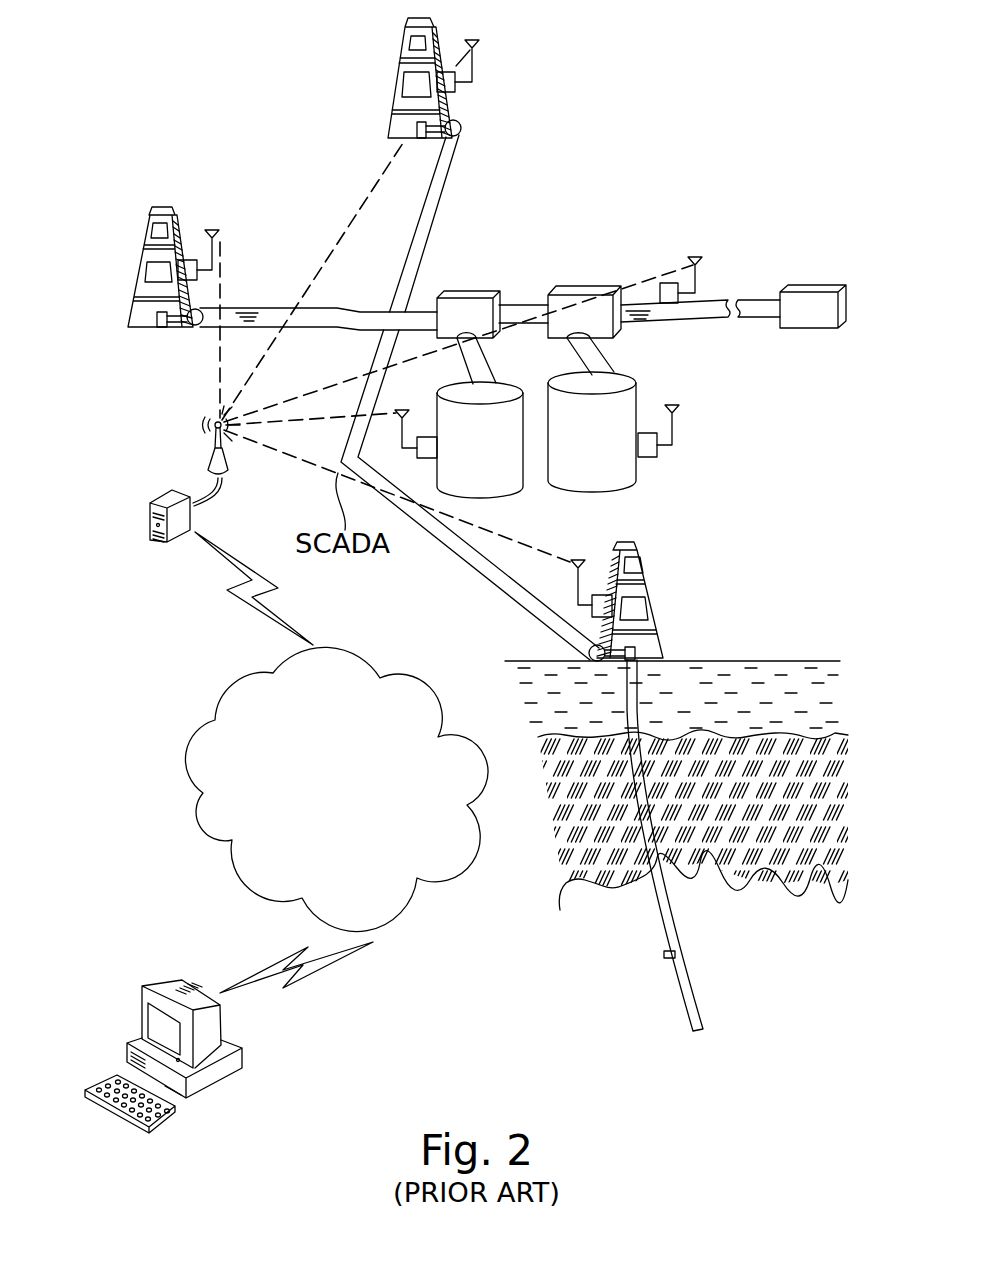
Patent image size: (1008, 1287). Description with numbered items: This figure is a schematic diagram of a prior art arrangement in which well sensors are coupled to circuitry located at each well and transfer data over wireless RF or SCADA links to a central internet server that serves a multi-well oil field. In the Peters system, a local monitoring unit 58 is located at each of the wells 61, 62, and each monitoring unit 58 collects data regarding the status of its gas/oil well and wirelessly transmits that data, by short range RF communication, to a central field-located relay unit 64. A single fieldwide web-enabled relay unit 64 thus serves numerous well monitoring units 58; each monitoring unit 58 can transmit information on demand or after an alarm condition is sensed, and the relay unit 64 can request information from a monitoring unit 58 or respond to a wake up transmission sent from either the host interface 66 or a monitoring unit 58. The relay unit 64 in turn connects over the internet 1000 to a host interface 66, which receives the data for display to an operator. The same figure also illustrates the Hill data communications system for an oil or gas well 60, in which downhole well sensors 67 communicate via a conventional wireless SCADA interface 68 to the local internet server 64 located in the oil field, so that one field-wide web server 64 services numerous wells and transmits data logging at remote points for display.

The local monitoring unit 58 is at (188, 260).
The oil or gas well 60 is at (700, 598).
The well 61 is at (552, 80).
The well 62 is at (194, 158).
The relay unit 64 is at (167, 500).
The host interface 66 is at (215, 1024).
The downhole well sensors 67 is at (664, 960).
The wireless SCADA interface 68 is at (601, 595).
The internet 1000 is at (202, 815).